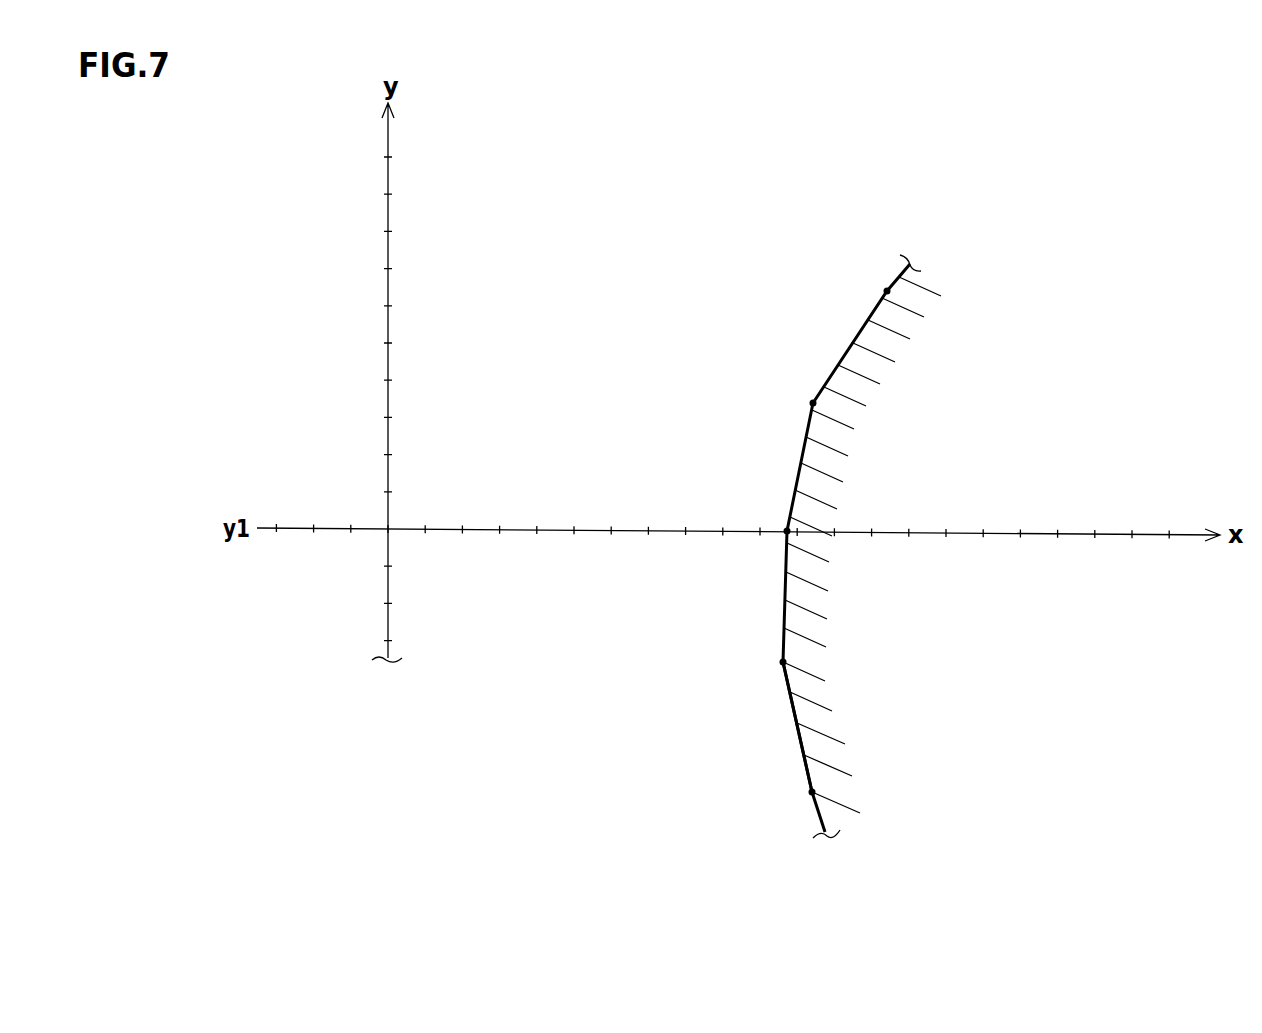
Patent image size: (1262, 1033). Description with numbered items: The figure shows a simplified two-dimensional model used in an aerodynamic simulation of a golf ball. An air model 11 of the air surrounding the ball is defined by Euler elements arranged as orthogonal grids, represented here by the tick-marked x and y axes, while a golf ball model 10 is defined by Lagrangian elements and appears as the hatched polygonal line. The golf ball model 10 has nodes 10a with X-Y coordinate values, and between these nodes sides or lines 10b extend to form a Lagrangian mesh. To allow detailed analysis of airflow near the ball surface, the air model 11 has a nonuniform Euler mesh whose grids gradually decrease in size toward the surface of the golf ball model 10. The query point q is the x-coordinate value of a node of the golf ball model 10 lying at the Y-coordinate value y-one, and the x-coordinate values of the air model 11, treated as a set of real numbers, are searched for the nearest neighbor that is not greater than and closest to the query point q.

The golf ball model 10 is at (849, 317).
The nodes 10a is at (813, 403).
The sides or lines 10b is at (798, 735).
The air model 11 is at (487, 513).
The query point q is at (787, 530).